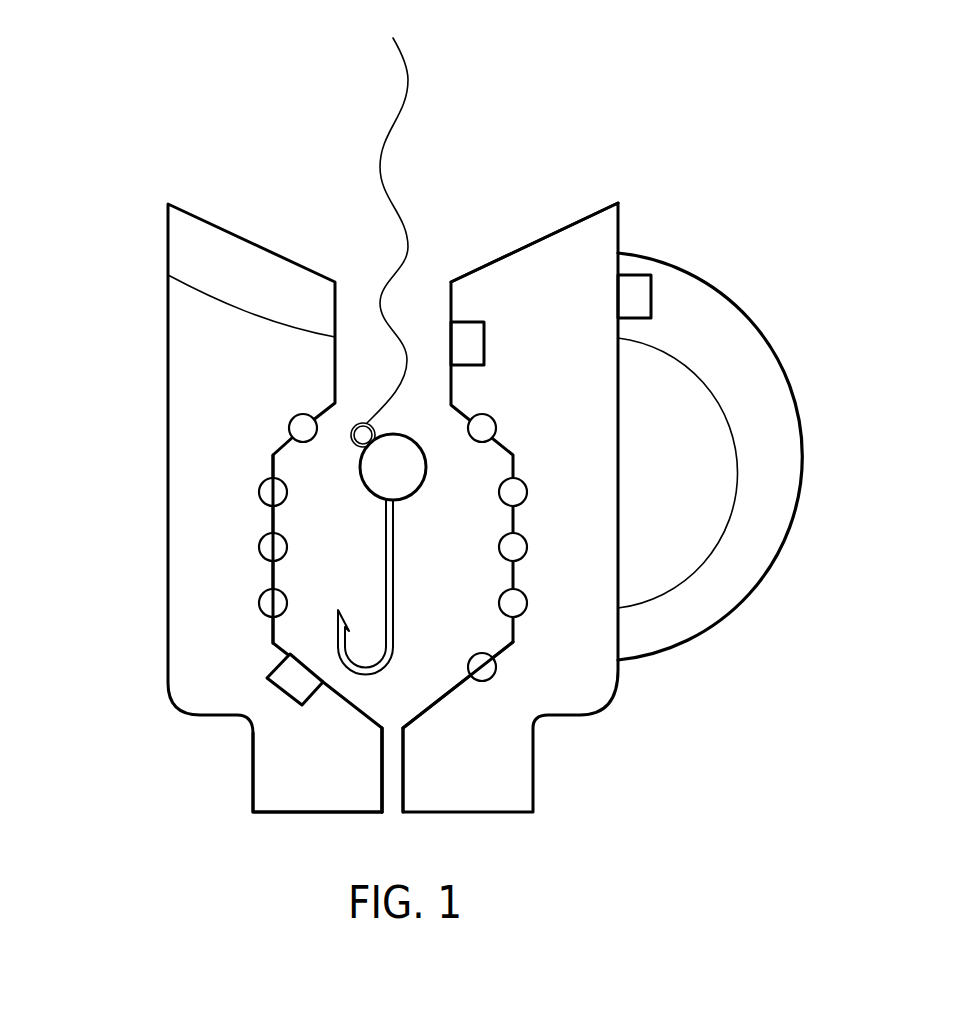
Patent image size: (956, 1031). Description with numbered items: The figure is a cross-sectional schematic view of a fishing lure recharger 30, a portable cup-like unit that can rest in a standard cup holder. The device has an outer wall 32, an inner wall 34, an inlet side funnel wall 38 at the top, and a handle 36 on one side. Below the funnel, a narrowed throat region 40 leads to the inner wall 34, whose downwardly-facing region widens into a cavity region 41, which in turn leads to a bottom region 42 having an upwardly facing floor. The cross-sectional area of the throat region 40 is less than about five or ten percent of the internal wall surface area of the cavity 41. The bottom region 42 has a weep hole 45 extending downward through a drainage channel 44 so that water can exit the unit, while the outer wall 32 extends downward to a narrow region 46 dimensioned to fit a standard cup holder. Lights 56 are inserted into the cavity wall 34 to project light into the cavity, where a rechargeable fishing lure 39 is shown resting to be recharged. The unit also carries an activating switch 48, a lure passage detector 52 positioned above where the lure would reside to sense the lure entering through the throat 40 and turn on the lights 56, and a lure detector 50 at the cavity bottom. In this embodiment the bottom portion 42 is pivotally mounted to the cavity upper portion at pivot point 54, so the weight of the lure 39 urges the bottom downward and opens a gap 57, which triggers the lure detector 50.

The fishing lure recharger 30 is at (649, 156).
The outer wall 32 is at (168, 337).
The inner wall 34 is at (515, 462).
The handle 36 is at (743, 617).
The inlet side funnel wall 38 is at (575, 222).
The rechargeable fishing lure 39 is at (376, 430).
The throat region 40 is at (168, 275).
The cavity region 41 is at (449, 552).
The bottom region 42 is at (442, 700).
The drainage channel 44 is at (404, 775).
The weep hole 45 is at (382, 745).
The narrow region 46 is at (253, 777).
The activating switch 48 is at (651, 295).
The lure detector 50 is at (267, 678).
The lure passage detector 52 is at (484, 342).
The pivot point 54 is at (516, 645).
The light 56 is at (260, 547).
The gap 57 is at (273, 642).